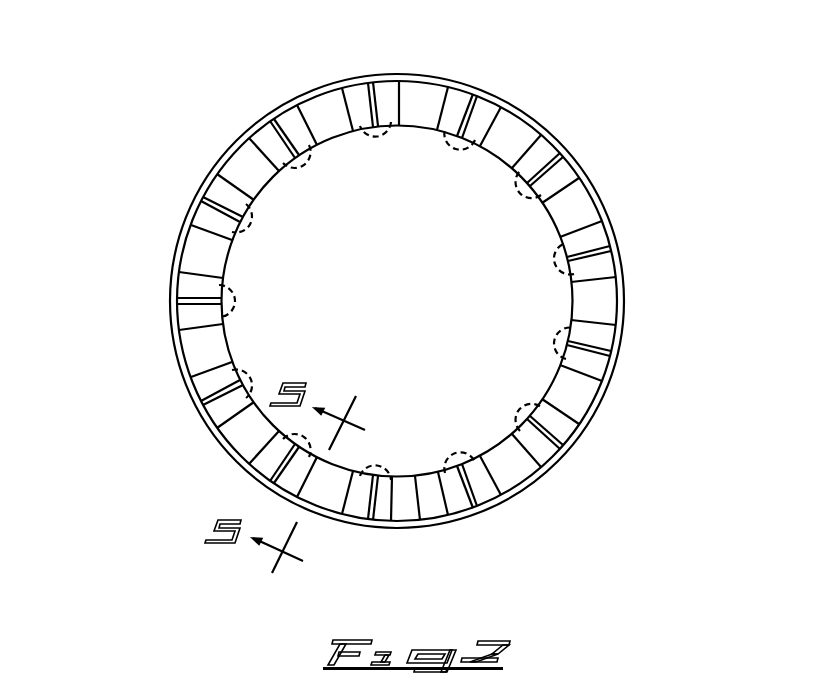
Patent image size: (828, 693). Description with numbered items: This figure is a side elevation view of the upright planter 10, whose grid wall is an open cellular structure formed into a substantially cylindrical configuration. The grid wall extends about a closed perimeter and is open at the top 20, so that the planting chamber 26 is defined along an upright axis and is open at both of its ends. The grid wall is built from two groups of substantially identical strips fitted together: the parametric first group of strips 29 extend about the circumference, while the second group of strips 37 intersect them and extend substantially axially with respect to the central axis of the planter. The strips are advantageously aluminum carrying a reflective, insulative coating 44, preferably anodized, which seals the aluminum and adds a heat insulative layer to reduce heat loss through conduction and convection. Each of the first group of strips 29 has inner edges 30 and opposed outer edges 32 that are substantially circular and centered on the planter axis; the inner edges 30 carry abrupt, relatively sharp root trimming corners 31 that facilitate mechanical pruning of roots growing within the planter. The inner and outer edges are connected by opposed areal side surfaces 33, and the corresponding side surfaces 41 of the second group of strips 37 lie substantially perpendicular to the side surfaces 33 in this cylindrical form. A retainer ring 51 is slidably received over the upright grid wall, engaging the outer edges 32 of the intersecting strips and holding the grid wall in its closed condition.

The planter 10 is at (566, 86).
The top 20 is at (180, 357).
The planting chamber 26 is at (282, 187).
The first group of strips 29 is at (604, 305).
The inner edges 30 is at (531, 180).
The root trimming corners 31 is at (517, 431).
The outer edges 32 is at (558, 460).
The side surfaces 33 is at (178, 318).
The second group of strips 37 is at (268, 128).
The side surfaces 41 is at (357, 80).
The reflective, insulative coating 44 is at (583, 210).
The retainer ring 51 is at (201, 422).